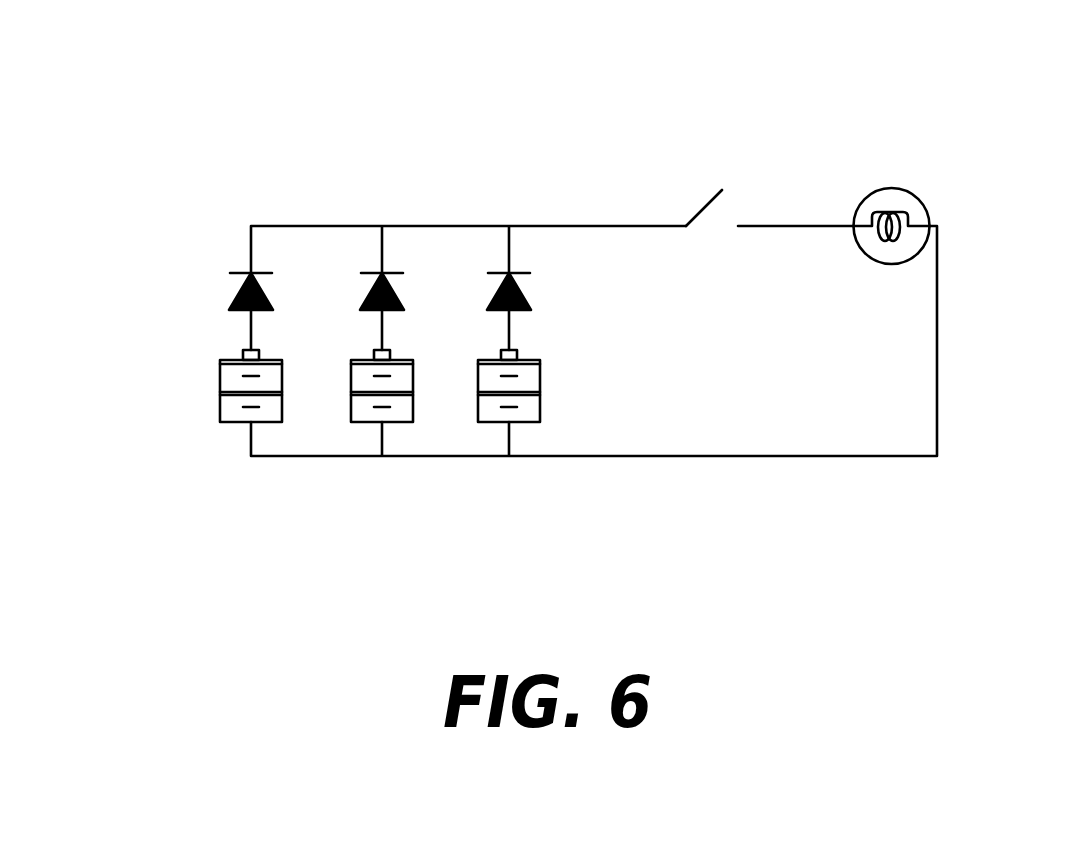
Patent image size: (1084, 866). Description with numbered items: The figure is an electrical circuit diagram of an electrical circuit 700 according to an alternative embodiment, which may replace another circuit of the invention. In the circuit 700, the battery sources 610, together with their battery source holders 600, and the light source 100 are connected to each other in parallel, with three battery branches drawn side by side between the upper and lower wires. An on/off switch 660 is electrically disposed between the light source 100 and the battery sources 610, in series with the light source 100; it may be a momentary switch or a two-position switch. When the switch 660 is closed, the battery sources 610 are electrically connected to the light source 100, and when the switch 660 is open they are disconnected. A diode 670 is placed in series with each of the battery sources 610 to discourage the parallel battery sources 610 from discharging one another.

The electrical circuit 700 is at (324, 104).
The on/off switch 660 is at (708, 201).
The light source 100 is at (877, 188).
The diodes 670 is at (560, 260).
The battery source holders 600 is at (315, 459).
The battery sources 610 is at (533, 423).